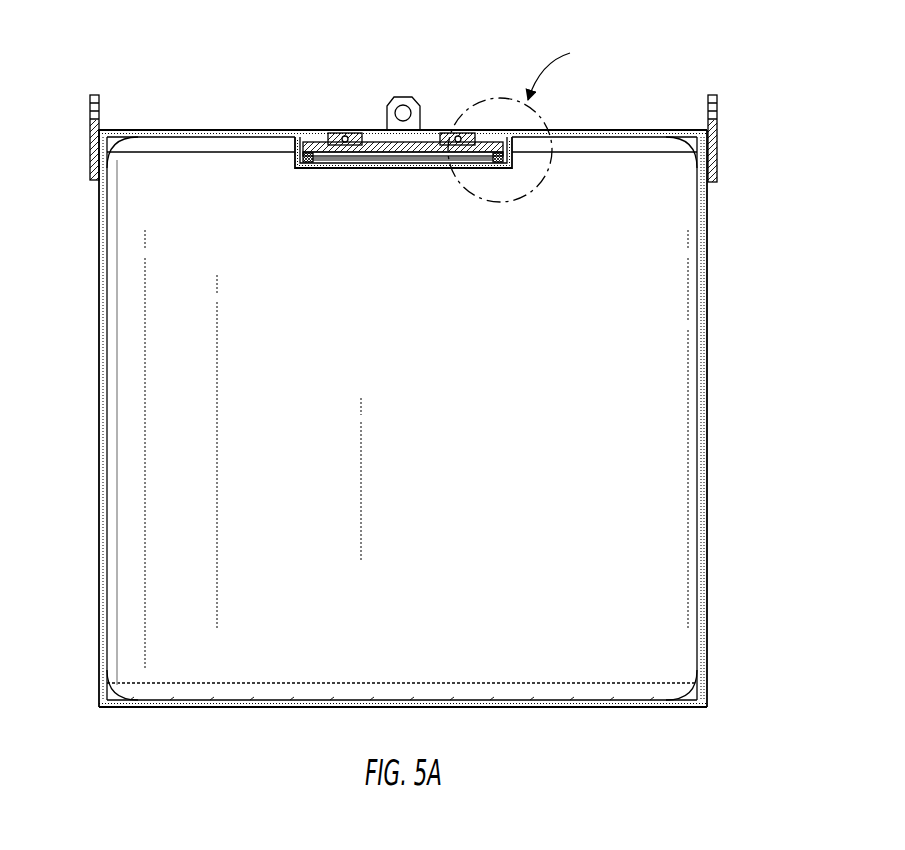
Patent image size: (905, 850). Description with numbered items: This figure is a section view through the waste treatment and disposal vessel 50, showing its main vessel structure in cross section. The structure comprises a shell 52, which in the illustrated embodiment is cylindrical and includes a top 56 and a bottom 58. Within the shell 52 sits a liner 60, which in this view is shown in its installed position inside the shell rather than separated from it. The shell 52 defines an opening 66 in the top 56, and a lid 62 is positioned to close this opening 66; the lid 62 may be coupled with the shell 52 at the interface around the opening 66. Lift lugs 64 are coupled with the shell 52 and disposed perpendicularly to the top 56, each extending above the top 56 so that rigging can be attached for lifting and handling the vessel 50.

The vessel 50 is at (172, 96).
The shell 52 is at (707, 266).
The top 56 is at (595, 127).
The bottom 58 is at (668, 708).
The liner 60 is at (678, 357).
The lid 62 is at (375, 140).
The lift lugs 64 is at (90, 160).
The opening 66 is at (303, 133).